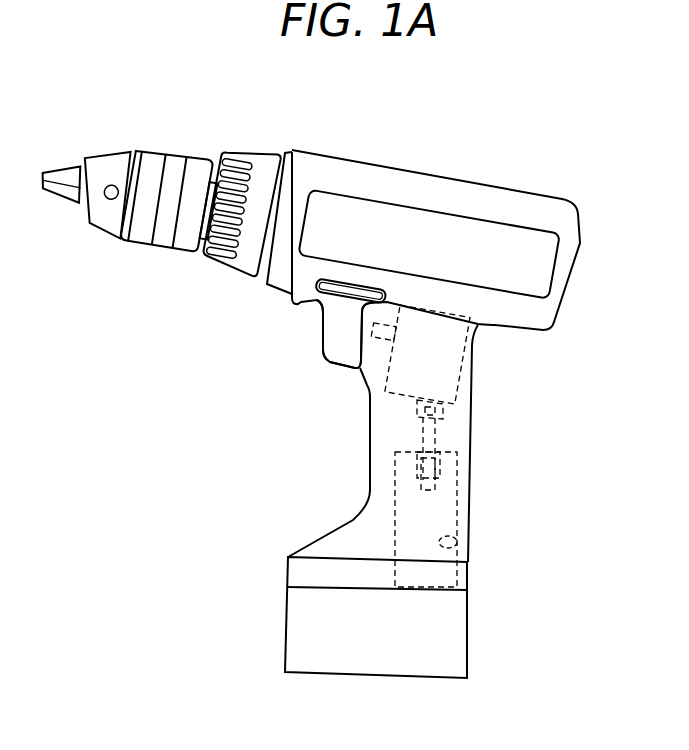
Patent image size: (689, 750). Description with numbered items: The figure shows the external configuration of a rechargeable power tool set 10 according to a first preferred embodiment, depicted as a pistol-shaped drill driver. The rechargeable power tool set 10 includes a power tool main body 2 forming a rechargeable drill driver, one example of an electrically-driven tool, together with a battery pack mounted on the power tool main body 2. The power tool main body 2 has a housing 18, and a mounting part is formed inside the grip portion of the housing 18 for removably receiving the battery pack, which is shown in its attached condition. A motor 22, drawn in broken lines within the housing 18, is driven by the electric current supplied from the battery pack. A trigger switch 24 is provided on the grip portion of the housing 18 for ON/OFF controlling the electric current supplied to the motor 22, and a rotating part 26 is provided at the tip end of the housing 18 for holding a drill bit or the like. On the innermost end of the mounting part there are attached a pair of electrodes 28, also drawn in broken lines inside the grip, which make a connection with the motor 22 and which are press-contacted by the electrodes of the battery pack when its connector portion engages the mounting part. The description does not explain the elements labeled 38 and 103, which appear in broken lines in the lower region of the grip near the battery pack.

The rechargeable power tool set 10 is at (126, 427).
The power tool main body 2 is at (484, 422).
The rotating part 26 is at (152, 163).
The trigger switch 24 is at (337, 338).
The housing 18 is at (380, 427).
The motor 22 is at (447, 352).
The pair of electrodes 28 is at (428, 463).
The control module 38 is at (430, 505).
The sensor 103 is at (457, 545).